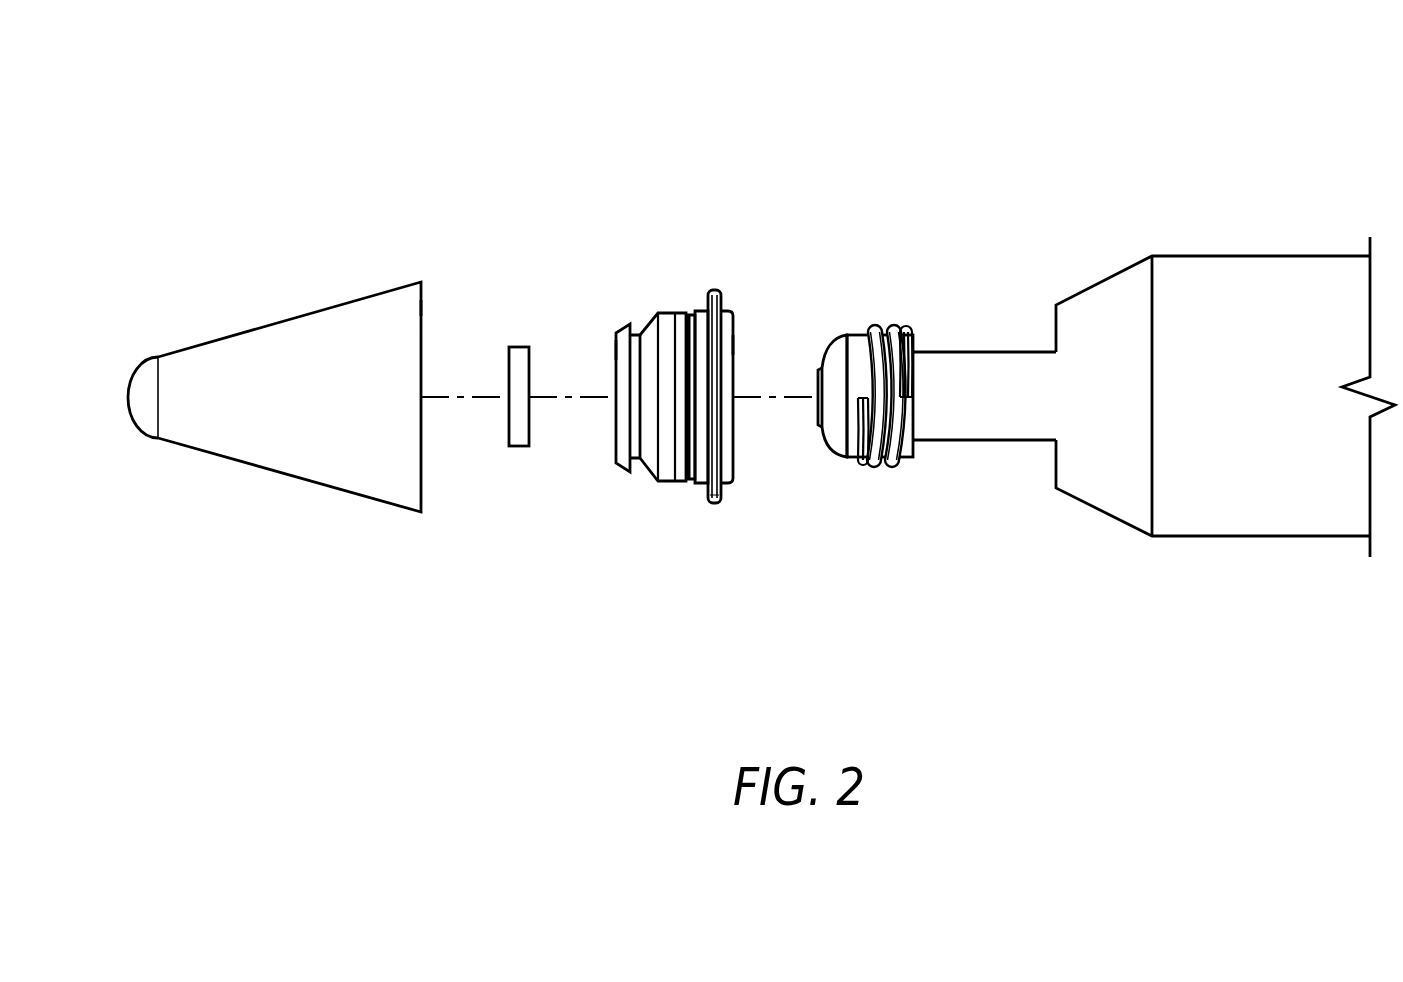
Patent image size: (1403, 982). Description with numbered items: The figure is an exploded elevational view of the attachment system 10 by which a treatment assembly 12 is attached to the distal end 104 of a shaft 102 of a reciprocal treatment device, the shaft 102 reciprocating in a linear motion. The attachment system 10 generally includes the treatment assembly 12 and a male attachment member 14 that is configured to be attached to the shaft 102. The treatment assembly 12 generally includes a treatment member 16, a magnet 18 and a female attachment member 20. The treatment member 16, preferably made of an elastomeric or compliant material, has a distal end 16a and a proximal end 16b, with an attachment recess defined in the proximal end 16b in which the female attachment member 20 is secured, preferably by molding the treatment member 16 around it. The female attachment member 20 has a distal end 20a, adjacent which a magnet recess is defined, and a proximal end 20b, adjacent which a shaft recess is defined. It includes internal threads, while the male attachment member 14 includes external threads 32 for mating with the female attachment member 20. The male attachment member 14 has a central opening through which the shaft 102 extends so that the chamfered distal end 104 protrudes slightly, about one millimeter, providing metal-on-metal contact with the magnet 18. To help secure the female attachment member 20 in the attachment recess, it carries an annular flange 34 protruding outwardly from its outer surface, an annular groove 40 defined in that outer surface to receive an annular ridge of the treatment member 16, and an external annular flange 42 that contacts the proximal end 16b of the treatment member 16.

The attachment system 10 is at (855, 167).
The treatment assembly 12 is at (555, 167).
The male attachment member 14 is at (892, 297).
The treatment member 16 is at (291, 315).
The distal end of treatment member 16a is at (123, 398).
The proximal end of treatment member 16b is at (420, 308).
The magnet 18 is at (518, 348).
The female attachment member 20 is at (645, 525).
The distal end of female attachment member 20a is at (615, 350).
The proximal end of female attachment member 20b is at (732, 345).
The external threads 32 is at (893, 467).
The annular flange 34 is at (628, 465).
The annular groove 40 is at (692, 313).
The external annular flange 42 is at (715, 503).
The shaft 102 is at (983, 373).
The distal end of shaft 104 is at (818, 410).